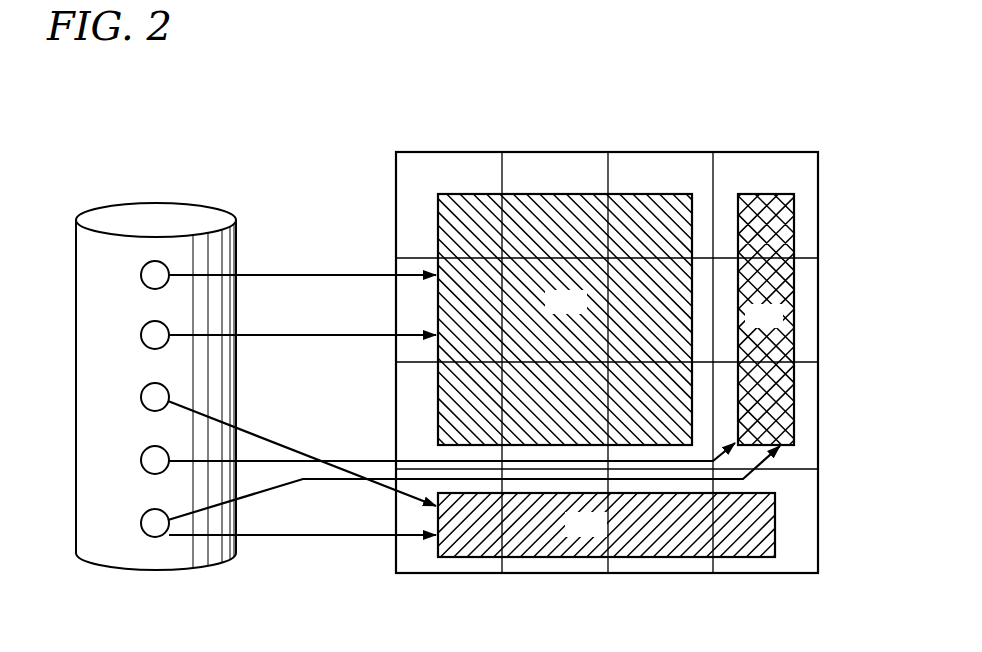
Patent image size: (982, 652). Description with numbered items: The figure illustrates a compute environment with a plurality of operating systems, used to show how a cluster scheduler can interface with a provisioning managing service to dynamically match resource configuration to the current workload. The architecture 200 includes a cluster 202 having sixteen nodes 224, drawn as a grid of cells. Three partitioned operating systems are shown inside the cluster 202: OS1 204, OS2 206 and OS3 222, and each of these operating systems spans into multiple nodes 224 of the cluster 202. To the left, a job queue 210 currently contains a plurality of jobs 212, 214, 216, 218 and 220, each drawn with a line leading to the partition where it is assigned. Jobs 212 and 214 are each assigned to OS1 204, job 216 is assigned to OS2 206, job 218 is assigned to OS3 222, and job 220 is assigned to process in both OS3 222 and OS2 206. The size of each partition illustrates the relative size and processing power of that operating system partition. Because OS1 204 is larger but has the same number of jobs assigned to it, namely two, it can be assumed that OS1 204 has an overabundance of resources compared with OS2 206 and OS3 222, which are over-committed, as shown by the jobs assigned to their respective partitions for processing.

The architecture 200 is at (303, 126).
The cluster 202 is at (432, 151).
The OS1 204 is at (642, 191).
The OS2 206 is at (436, 556).
The job queue 210 is at (112, 210).
The job 212 is at (141, 275).
The job 214 is at (141, 335).
The job 216 is at (141, 397).
The job 218 is at (141, 460).
The job 220 is at (141, 523).
The OS3 222 is at (782, 337).
The nodes 224 is at (799, 500).